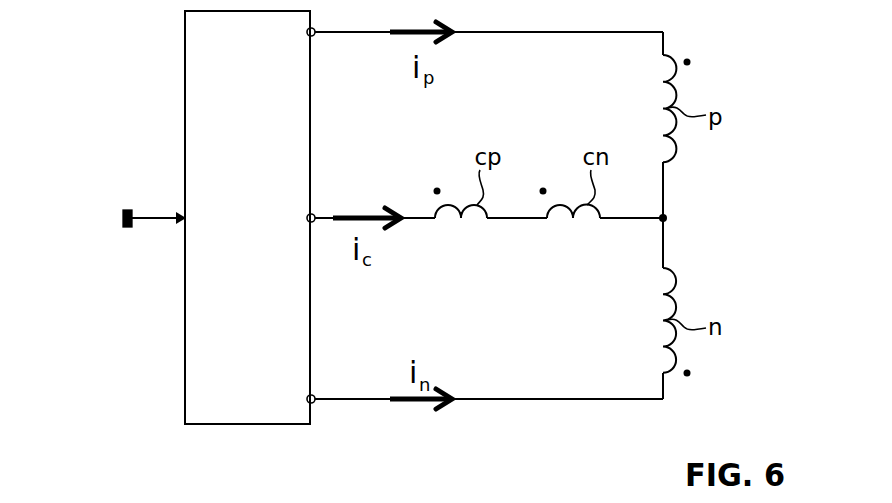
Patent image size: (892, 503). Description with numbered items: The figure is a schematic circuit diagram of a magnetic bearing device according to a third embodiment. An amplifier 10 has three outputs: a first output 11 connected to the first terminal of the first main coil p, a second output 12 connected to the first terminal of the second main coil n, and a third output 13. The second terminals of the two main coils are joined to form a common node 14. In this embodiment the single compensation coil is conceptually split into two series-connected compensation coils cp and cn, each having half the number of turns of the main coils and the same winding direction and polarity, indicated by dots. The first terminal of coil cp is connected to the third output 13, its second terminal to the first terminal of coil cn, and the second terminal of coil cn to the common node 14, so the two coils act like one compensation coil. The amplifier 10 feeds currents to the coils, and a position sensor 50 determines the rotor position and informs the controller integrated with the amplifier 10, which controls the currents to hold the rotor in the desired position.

The amplifier 10 is at (263, 137).
The first output 11 is at (306, 34).
The second output 12 is at (306, 400).
The third output 13 is at (306, 219).
The common node 14 is at (667, 217).
The position sensor 50 is at (125, 212).